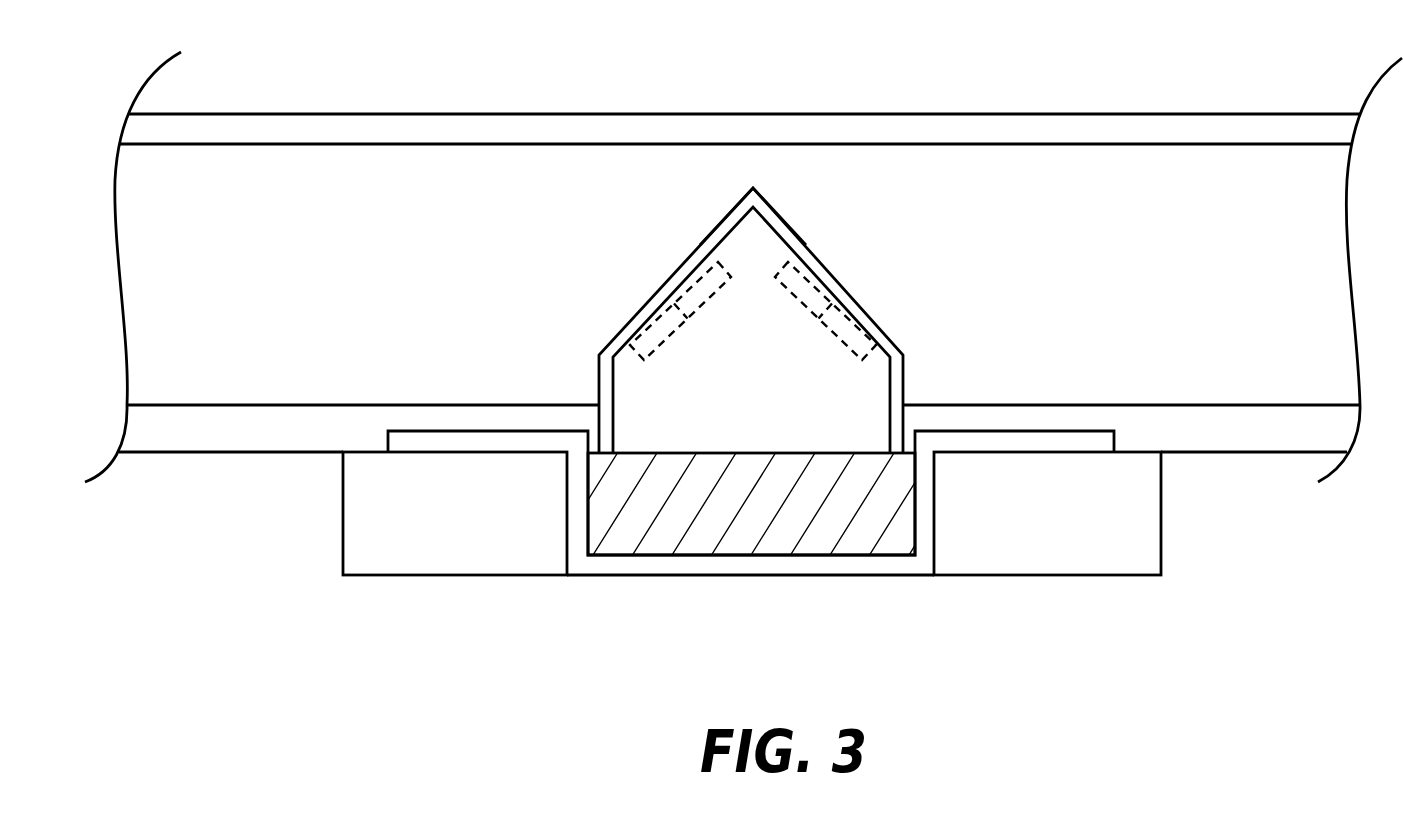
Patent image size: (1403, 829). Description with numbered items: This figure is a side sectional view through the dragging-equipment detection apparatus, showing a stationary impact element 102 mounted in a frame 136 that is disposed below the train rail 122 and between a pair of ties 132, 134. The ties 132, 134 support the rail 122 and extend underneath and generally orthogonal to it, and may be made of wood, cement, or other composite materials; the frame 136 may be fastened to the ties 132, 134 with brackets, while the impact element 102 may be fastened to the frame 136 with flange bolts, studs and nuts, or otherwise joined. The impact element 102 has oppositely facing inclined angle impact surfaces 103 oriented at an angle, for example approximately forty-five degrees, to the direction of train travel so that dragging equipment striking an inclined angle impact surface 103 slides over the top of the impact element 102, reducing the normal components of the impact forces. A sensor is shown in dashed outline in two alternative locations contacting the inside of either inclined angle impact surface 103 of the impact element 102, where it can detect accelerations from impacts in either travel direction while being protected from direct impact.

The train rail 122 is at (1209, 130).
The stationary impact element 102 is at (903, 388).
The inclined angle impact surface 103 is at (778, 212).
The frame 136 is at (703, 535).
The tie 134 is at (418, 558).
The tie 132 is at (1102, 562).